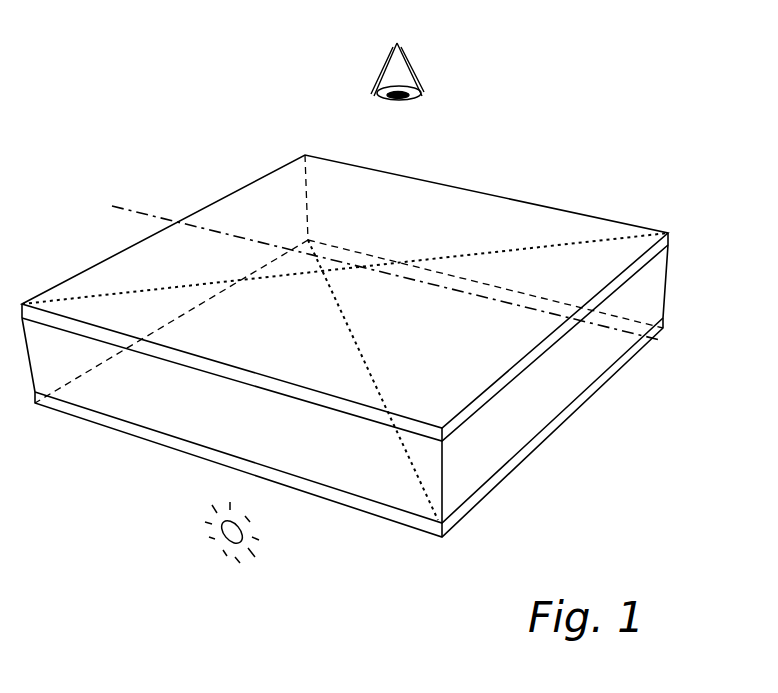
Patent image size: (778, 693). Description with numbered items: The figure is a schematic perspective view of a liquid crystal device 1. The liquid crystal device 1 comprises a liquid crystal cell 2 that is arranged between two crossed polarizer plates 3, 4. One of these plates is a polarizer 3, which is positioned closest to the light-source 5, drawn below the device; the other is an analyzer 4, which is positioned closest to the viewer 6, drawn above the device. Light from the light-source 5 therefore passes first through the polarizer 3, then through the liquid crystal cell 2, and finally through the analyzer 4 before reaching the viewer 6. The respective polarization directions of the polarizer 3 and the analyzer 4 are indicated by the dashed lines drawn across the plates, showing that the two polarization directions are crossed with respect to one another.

The liquid crystal device 1 is at (553, 133).
The liquid crystal cell 2 is at (107, 400).
The polarizer 3 is at (550, 430).
The analyzer 4 is at (645, 264).
The light-source 5 is at (228, 537).
The viewer 6 is at (408, 64).